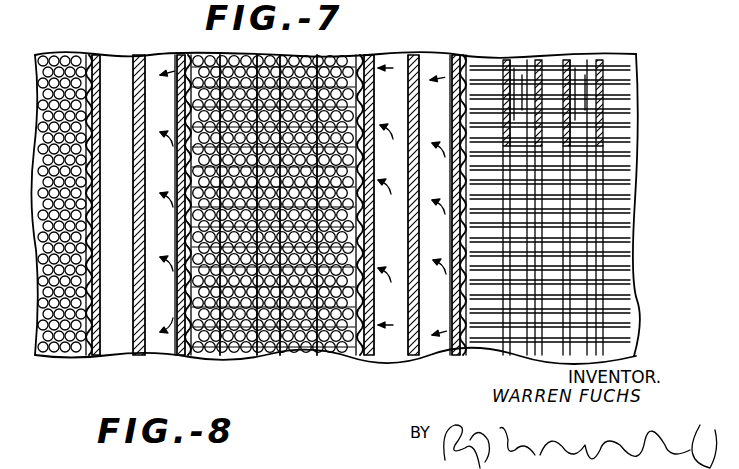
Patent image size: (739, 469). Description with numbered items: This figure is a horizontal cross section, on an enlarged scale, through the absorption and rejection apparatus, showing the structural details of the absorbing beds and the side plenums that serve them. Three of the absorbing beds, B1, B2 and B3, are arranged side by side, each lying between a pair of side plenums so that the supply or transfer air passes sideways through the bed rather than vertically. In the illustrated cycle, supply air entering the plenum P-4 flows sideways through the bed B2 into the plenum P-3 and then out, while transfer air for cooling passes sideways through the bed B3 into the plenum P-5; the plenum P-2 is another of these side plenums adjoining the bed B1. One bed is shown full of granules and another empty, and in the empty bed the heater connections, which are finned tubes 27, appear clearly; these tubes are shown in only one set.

The absorbing bed B1 is at (62, 52).
The absorbing bed B2 is at (200, 52).
The absorbing bed B3 is at (555, 62).
The finned tubes 27 is at (617, 97).
The side plenum P-2 is at (118, 340).
The side plenum P-3 is at (153, 342).
The side plenum P-4 is at (398, 345).
The side plenum P-5 is at (435, 343).